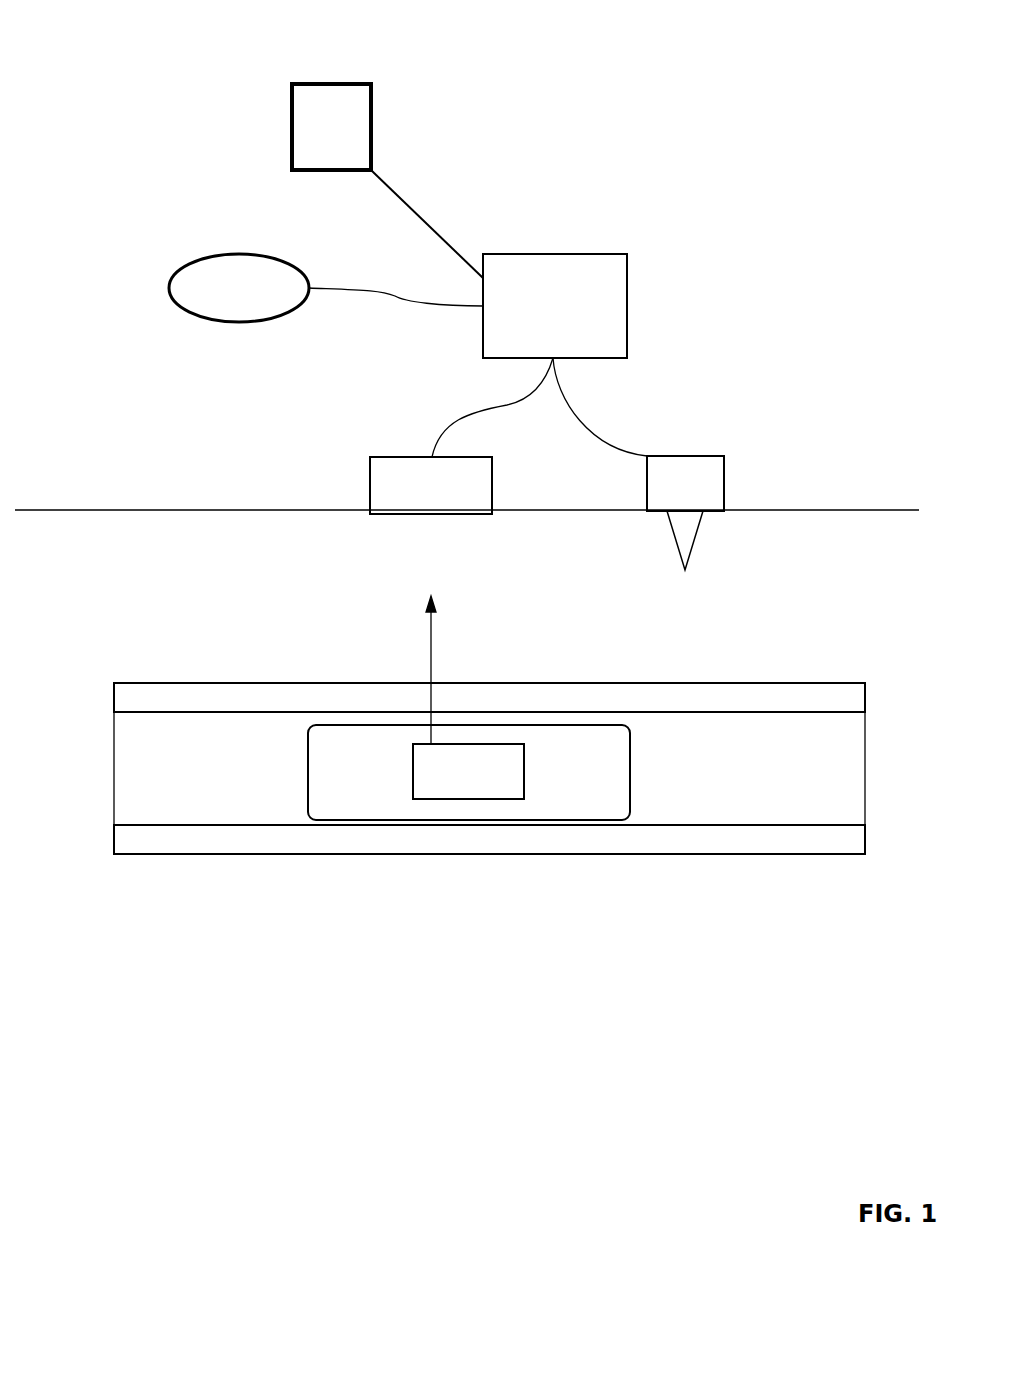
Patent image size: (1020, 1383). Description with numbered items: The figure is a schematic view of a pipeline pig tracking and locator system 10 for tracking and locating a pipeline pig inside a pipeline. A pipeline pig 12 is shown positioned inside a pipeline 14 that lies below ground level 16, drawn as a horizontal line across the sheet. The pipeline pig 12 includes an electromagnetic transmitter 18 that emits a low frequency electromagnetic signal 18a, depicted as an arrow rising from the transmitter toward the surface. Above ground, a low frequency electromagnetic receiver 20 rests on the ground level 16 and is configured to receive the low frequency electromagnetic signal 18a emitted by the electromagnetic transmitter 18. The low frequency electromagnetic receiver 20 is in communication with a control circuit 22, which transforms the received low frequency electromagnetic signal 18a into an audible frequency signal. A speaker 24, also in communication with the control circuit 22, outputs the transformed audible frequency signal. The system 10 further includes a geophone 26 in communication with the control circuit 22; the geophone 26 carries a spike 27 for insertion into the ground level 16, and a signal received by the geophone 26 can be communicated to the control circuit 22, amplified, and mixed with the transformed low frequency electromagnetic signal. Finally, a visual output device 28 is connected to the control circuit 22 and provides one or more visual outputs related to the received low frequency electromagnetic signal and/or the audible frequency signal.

The system 10 is at (613, 146).
The pipeline pig 12 is at (307, 772).
The pipeline 14 is at (197, 855).
The ground level 16 is at (115, 505).
The electromagnetic transmitter 18 is at (468, 744).
The low frequency electromagnetic signal 18a is at (431, 642).
The low frequency electromagnetic receiver 20 is at (370, 486).
The control circuit 22 is at (634, 288).
The speaker 24 is at (239, 253).
The geophone 26 is at (724, 456).
The spike 27 is at (683, 530).
The visual output device 28 is at (325, 84).